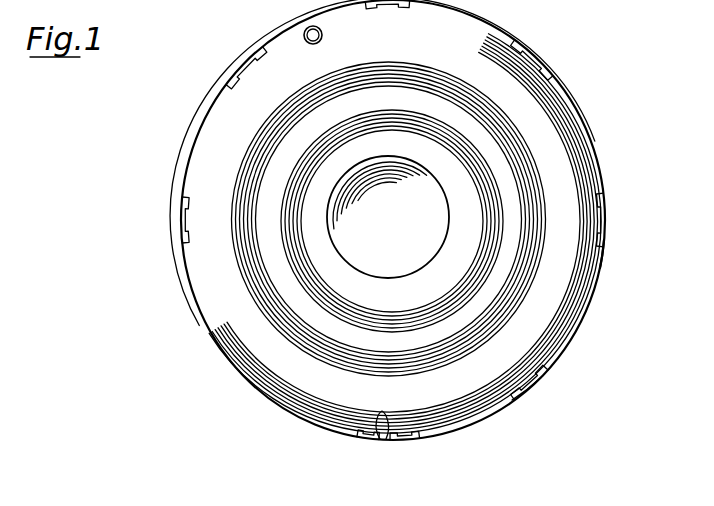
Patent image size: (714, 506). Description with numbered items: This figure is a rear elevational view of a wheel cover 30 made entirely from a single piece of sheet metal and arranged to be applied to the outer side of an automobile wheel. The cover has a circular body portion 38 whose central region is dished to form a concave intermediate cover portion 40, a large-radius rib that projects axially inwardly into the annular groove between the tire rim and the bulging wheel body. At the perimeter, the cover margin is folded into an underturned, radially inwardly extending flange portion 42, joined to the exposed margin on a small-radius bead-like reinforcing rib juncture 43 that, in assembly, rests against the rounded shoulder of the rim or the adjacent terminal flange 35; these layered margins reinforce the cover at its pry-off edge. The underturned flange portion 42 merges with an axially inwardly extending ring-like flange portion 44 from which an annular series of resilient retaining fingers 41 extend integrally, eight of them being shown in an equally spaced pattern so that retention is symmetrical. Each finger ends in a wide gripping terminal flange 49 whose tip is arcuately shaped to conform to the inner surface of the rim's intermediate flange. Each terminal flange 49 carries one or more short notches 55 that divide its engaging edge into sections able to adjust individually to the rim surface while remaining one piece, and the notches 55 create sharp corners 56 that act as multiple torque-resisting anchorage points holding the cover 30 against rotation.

The wheel cover 30 is at (302, 448).
The terminal flange 35 is at (482, 501).
The circular body portion 38 is at (414, 315).
The intermediate cover portion 40 is at (433, 421).
The retaining fingers 41 is at (486, 447).
The underturned flange portion 42 is at (600, 264).
The reinforcing rib juncture 43 is at (577, 337).
The ring-like flange portion 44 is at (583, 305).
The gripping terminal flange 49 is at (546, 381).
The notches 55 is at (392, 440).
The sharp corners 56 is at (382, 412).